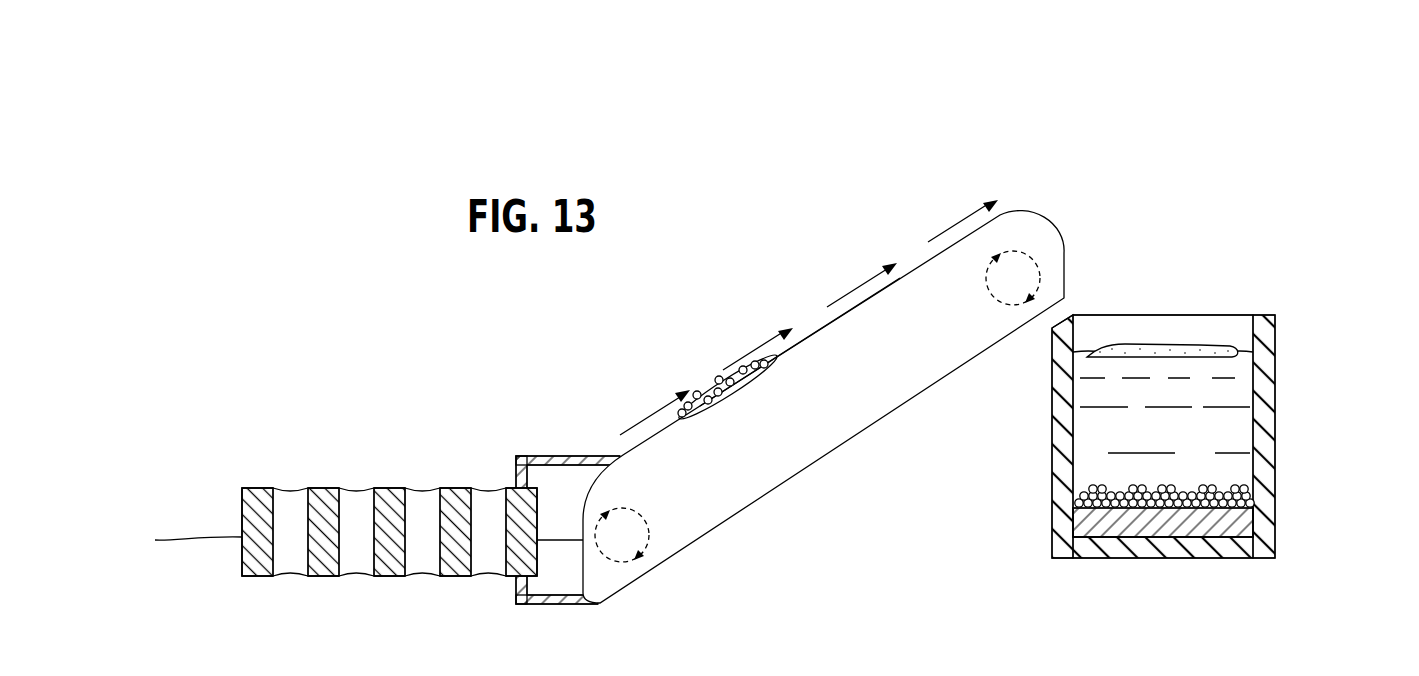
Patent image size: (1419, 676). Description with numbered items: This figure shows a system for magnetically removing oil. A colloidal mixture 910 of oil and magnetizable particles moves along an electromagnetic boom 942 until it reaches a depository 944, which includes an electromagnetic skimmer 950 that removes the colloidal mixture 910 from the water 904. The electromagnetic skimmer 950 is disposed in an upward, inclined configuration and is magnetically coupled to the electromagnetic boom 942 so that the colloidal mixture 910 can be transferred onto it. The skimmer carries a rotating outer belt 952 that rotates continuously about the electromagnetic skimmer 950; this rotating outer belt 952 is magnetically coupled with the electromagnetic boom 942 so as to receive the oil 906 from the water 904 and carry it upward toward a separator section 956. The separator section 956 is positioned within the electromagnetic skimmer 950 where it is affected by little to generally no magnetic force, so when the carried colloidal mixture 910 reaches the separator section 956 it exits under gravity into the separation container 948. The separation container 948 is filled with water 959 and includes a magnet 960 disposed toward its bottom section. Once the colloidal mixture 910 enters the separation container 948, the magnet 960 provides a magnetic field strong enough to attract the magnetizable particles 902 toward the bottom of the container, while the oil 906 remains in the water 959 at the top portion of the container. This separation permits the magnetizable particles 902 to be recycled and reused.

The water 904 is at (202, 537).
The electromagnetic boom 942 is at (359, 466).
The colloidal mixture 910 is at (692, 366).
The rotating outer belt 952 is at (797, 319).
The depository 944 is at (761, 200).
The separator section 956 is at (1057, 200).
The electromagnetic skimmer 950 is at (838, 349).
The separation container 948 is at (1223, 432).
The oil 906 is at (1127, 345).
The water 959 is at (1198, 393).
The magnetizable particles 902 is at (1155, 508).
The magnet 960 is at (1228, 522).